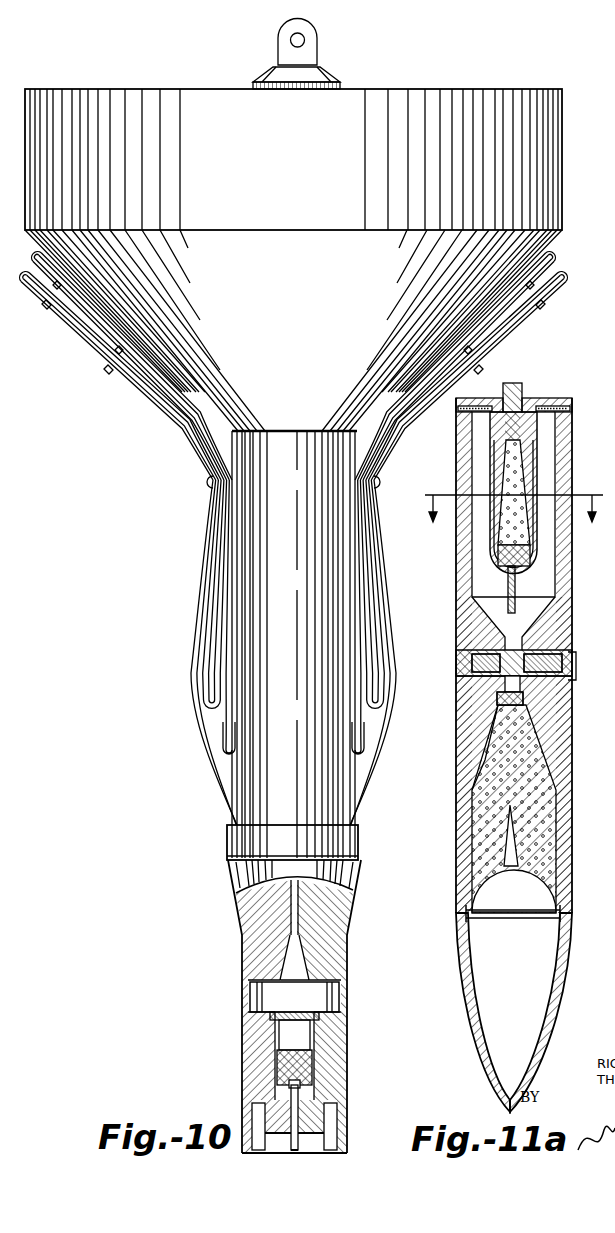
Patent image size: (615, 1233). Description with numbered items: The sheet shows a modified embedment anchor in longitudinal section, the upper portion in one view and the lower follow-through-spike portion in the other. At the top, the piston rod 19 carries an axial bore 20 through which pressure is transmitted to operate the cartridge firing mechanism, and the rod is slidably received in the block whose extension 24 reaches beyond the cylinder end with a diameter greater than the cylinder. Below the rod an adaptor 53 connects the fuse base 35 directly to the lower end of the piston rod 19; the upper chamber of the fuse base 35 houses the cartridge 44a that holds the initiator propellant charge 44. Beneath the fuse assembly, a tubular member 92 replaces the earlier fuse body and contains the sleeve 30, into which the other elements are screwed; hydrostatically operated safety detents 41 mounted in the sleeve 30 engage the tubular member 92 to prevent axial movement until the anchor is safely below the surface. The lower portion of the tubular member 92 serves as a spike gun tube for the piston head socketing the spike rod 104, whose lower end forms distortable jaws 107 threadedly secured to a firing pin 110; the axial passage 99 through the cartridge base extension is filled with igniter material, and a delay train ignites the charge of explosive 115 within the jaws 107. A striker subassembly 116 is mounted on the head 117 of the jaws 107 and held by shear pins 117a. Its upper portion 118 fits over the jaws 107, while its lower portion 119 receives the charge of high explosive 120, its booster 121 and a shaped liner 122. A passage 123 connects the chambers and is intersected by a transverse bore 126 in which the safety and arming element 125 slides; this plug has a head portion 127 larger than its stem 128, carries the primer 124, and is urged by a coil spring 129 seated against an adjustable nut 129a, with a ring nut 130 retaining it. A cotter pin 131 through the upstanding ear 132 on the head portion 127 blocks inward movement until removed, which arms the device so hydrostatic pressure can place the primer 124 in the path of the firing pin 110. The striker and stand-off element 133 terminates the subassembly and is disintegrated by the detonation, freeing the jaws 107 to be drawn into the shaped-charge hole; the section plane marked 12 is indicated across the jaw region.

In FIG. 10, the extension 24 is at (359, 842).
In FIG. 10, the axial bore 20 is at (298, 893).
In FIG. 10, the piston rod 19 is at (348, 912).
In FIG. 10, the adaptor 53 is at (348, 975).
In FIG. 10, the initiator propellant charge 44 is at (345, 1053).
In FIG. 10, the cartridge 44a is at (277, 1075).
In FIG. 10, the fuse base 35 is at (345, 1073).
In FIG. 10, the tubular member 92 is at (345, 1117).
In FIG. 11A, the tubular member 92 is at (614, 380).
In FIG. 10, the sleeve 30 is at (345, 1133).
In FIG. 11A, the spike rod 104 is at (522, 388).
In FIG. 11A, the head 117 is at (532, 408).
In FIG. 11A, the shear pins 117a is at (570, 410).
In FIG. 11A, the distortable jaws 107 is at (535, 462).
In FIG. 11A, the charge of explosive 115 is at (532, 548).
In FIG. 11A, the axial passage 99 is at (606, 555).
In FIG. 11A, the firing pin 110 is at (527, 572).
In FIG. 11A, the upper portion 118 is at (472, 577).
In FIG. 11A, the striker subassembly 116 is at (570, 609).
In FIG. 11A, the passage 123 is at (475, 622).
In FIG. 11A, the safety and arming element 125 is at (567, 627).
In FIG. 11A, the stem 128 is at (472, 650).
In FIG. 11A, the ring nut 130 is at (562, 643).
In FIG. 11A, the transverse bore 126 is at (495, 656).
In FIG. 11A, the upstanding ear 132 is at (577, 658).
In FIG. 11A, the adjustable nut 129a is at (485, 678).
In FIG. 11A, the cotter pin 131 is at (574, 679).
In FIG. 11A, the coil spring 129 is at (500, 697).
In FIG. 11A, the head portion 127 is at (560, 698).
In FIG. 11A, the booster 121 is at (490, 710).
In FIG. 11A, the primer 124 is at (556, 716).
In FIG. 11A, the charge of high explosive 120 is at (537, 733).
In FIG. 11A, the lower portion 119 is at (556, 798).
In FIG. 11A, the shaped liner 122 is at (538, 886).
In FIG. 11A, the striker and stand-off element 133 is at (550, 947).
In FIG. 11A, the section line 12 is at (514, 520).
In FIG. 11A, the safety detents 41 is at (614, 352).